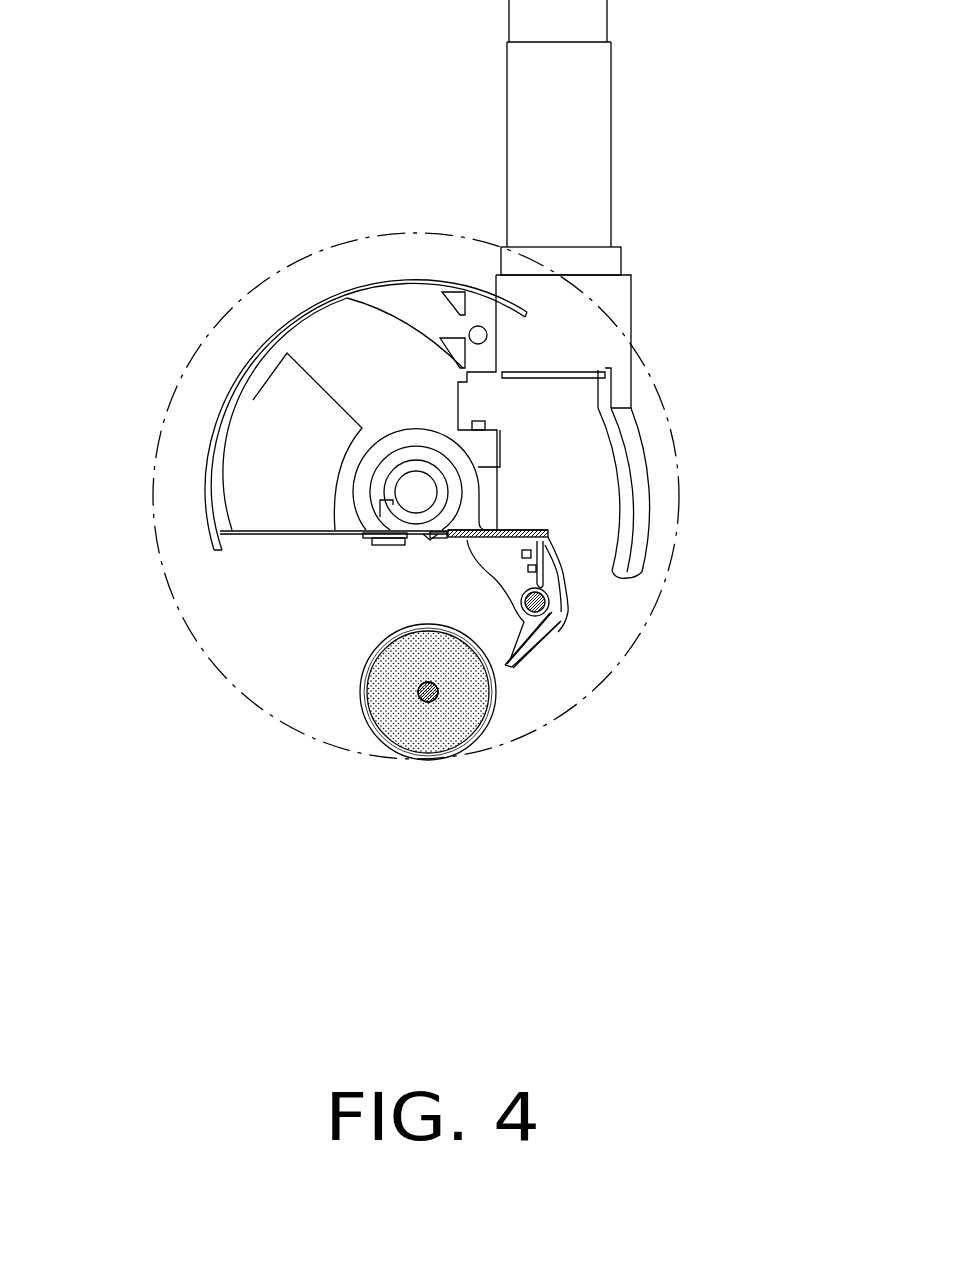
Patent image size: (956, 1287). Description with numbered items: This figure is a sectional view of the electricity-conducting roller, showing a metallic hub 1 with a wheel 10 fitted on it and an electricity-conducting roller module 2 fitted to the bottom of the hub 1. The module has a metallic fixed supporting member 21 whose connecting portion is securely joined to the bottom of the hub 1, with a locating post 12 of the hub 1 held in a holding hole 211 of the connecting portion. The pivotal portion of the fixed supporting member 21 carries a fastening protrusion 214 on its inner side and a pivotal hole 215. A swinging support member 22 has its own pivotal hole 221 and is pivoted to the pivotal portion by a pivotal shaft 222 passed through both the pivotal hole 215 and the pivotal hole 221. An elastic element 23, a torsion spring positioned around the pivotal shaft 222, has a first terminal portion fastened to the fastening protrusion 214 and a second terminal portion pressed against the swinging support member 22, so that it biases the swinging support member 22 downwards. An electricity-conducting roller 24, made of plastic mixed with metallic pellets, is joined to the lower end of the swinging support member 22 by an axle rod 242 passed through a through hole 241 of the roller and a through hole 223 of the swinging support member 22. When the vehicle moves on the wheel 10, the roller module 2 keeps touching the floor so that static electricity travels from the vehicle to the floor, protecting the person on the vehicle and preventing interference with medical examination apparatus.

The metallic hub 1 is at (338, 532).
The wheel 10 is at (237, 298).
The locating post 12 is at (437, 545).
The electricity-conducting roller module 2 is at (628, 783).
The fixed supporting member 21 is at (525, 529).
The holding hole 211 is at (440, 539).
The fastening protrusion 214 is at (552, 540).
The pivotal hole 215 is at (556, 618).
The swinging support member 22 is at (513, 663).
The pivotal hole 221 is at (540, 564).
The pivotal shaft 222 is at (562, 617).
The through hole 223 is at (430, 702).
The elastic element 23 is at (548, 598).
The electricity-conducting roller 24 is at (360, 691).
The through hole 241 is at (428, 692).
The axle rod 242 is at (420, 700).